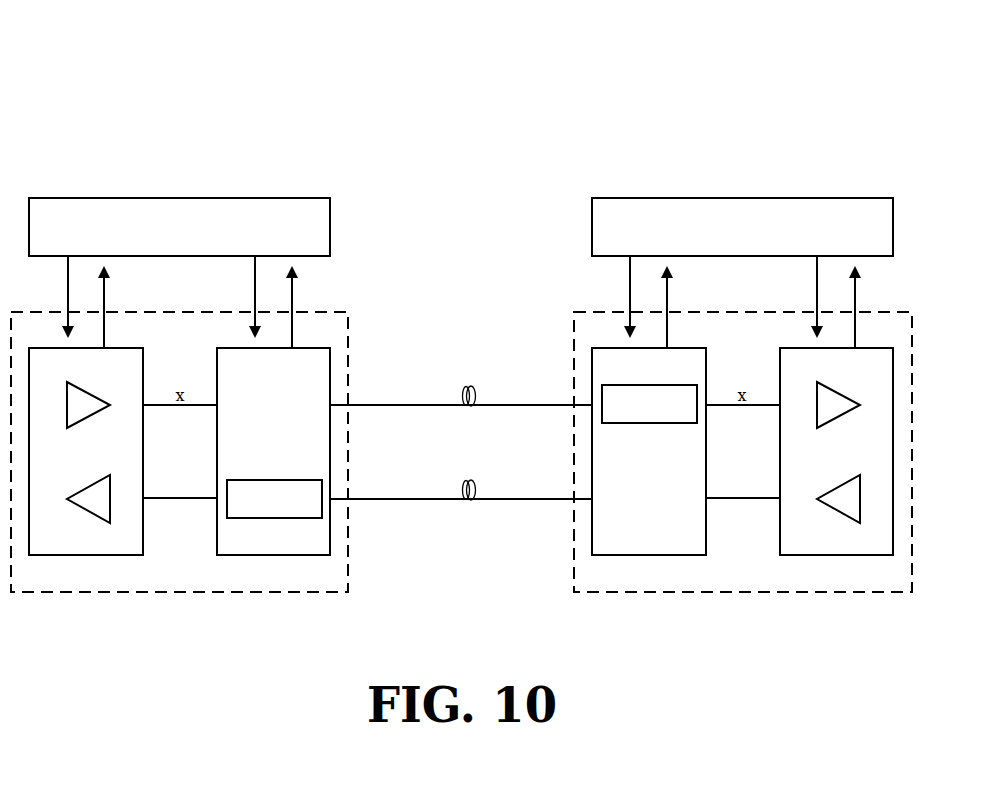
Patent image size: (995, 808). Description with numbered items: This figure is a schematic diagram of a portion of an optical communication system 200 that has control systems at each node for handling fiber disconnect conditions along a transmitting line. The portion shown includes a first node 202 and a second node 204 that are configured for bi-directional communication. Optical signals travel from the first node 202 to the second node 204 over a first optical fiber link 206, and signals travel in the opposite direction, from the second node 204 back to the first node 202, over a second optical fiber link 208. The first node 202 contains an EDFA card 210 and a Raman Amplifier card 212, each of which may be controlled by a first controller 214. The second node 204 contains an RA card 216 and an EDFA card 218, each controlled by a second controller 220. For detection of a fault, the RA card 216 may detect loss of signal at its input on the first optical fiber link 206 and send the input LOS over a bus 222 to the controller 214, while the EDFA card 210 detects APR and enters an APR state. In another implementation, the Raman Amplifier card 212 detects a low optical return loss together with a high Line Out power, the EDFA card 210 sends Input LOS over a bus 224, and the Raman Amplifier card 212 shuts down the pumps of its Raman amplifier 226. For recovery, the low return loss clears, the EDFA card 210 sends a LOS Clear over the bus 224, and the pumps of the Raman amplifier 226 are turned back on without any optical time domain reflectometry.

The optical communication system 200 is at (232, 80).
The first node 202 is at (348, 368).
The second node 204 is at (573, 338).
The first optical fiber link 206 is at (385, 405).
The second optical fiber link 208 is at (518, 499).
The EDFA card 210 is at (95, 555).
The Raman Amplifier card 212 is at (273, 555).
The first controller 214 is at (330, 227).
The RA card 216 is at (657, 555).
The EDFA card 218 is at (835, 555).
The second controller 220 is at (592, 227).
The bus 222 is at (292, 285).
The bus 224 is at (104, 283).
The Raman amplifier 226 is at (265, 480).